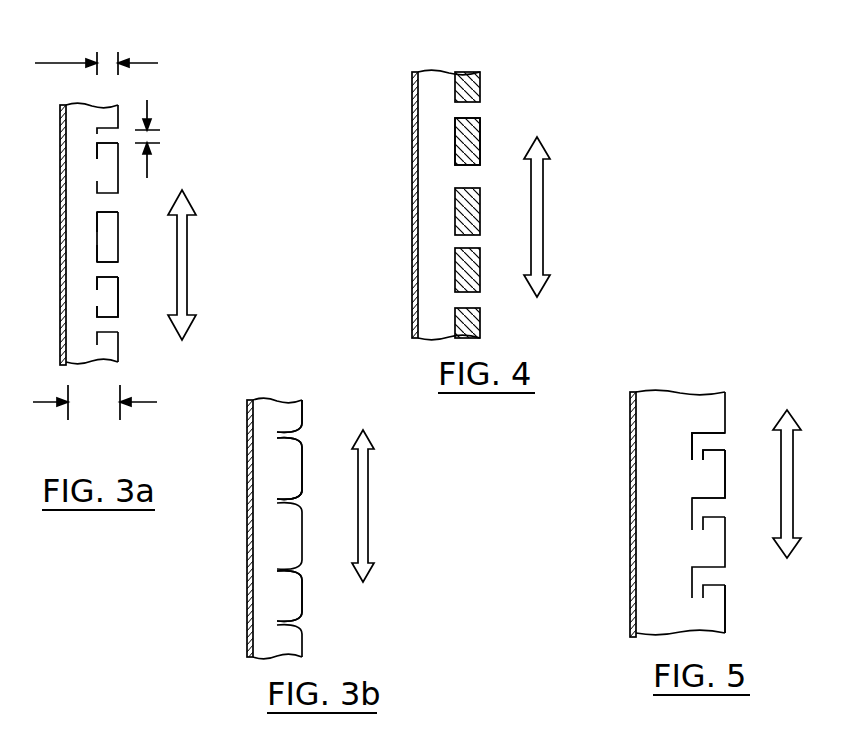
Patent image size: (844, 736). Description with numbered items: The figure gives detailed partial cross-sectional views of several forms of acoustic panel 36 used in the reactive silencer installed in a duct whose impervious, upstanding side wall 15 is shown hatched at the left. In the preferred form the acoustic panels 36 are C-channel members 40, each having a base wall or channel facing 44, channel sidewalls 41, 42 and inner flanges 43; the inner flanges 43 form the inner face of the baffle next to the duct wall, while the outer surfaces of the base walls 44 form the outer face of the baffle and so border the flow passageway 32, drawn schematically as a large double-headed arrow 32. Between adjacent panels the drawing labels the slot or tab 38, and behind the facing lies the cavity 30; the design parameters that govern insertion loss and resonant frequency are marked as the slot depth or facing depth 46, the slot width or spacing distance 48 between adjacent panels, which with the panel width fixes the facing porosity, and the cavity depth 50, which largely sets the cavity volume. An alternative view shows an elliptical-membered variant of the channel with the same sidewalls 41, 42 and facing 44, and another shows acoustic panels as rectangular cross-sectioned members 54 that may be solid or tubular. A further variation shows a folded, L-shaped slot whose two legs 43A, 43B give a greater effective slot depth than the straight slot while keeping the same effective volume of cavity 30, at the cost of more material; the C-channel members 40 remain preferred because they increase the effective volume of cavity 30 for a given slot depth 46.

In FIG. 3A, the side wall 15 is at (63, 225).
In FIG. 3B, the side wall 15 is at (248, 528).
In FIG. 4, the side wall 15 is at (413, 136).
In FIG. 5, the side wall 15 is at (631, 509).
In FIG. 3A, the cavity 30 is at (92, 253).
In FIG. 3B, the cavity 30 is at (283, 610).
In FIG. 4, the cavity 30 is at (448, 206).
In FIG. 5, the cavity 30 is at (678, 582).
In FIG. 3A, the passageway 32 is at (187, 262).
In FIG. 3B, the passageway 32 is at (369, 503).
In FIG. 4, the passageway 32 is at (544, 229).
In FIG. 5, the passageway 32 is at (794, 482).
In FIG. 5, the acoustic panel 36 is at (731, 612).
In FIG. 3A, the tab 38 is at (100, 138).
In FIG. 3B, the tab 38 is at (291, 626).
In FIG. 4, the tab 38 is at (457, 240).
In FIG. 5, the tab 38 is at (720, 440).
In FIG. 3A, the C-channel member 40 is at (120, 290).
In FIG. 3A, the channel sidewall 41 is at (111, 212).
In FIG. 3B, the channel sidewall 41 is at (296, 442).
In FIG. 3A, the channel sidewall 42 is at (110, 263).
In FIG. 3B, the channel sidewall 42 is at (292, 498).
In FIG. 3A, the inner flange 43 is at (97, 213).
In FIG. 5, the first bend line 43A is at (690, 450).
In FIG. 5, the second bend line 43B is at (700, 461).
In FIG. 3A, the base wall 44 is at (119, 241).
In FIG. 3B, the base wall 44 is at (303, 476).
In FIG. 5, the base wall 44 is at (726, 484).
In FIG. 3A, the slot depth 46 is at (147, 23).
In FIG. 3A, the slot width 48 is at (212, 124).
In FIG. 3A, the cavity depth 50 is at (112, 451).
In FIG. 4, the rectangular cross-sectioned member 54 is at (470, 131).